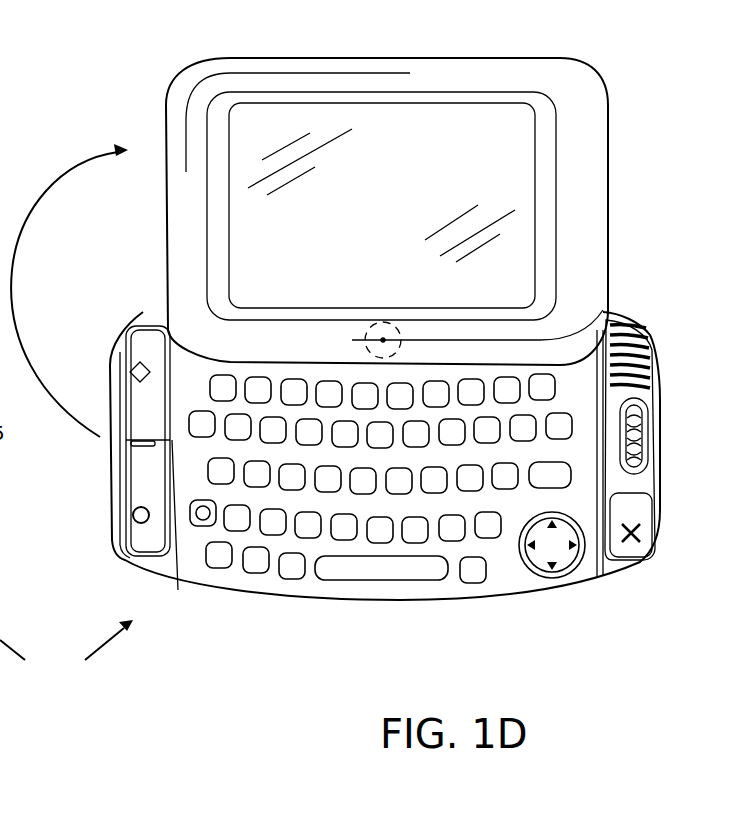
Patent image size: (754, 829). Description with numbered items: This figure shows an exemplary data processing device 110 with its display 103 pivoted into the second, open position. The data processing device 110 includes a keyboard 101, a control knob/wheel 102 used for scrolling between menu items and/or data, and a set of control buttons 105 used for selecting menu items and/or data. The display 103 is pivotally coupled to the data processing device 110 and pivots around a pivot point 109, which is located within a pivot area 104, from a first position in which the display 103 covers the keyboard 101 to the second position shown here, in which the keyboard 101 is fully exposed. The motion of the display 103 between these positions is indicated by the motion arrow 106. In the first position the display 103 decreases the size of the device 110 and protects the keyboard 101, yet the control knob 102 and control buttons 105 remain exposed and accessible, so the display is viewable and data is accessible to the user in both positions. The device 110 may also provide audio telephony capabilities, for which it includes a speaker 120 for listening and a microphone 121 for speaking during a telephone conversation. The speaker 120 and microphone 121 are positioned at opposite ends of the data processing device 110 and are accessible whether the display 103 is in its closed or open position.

The keyboard 101 is at (400, 567).
The control knob/wheel 102 is at (650, 430).
The display 103 is at (608, 172).
The pivot area 104 is at (400, 315).
The control buttons 105 is at (130, 345).
The motion arrow 106 is at (69, 290).
The pivot point 109 is at (375, 328).
The data processing device 110 is at (66, 652).
The speaker 120 is at (650, 355).
The microphone 121 is at (178, 590).